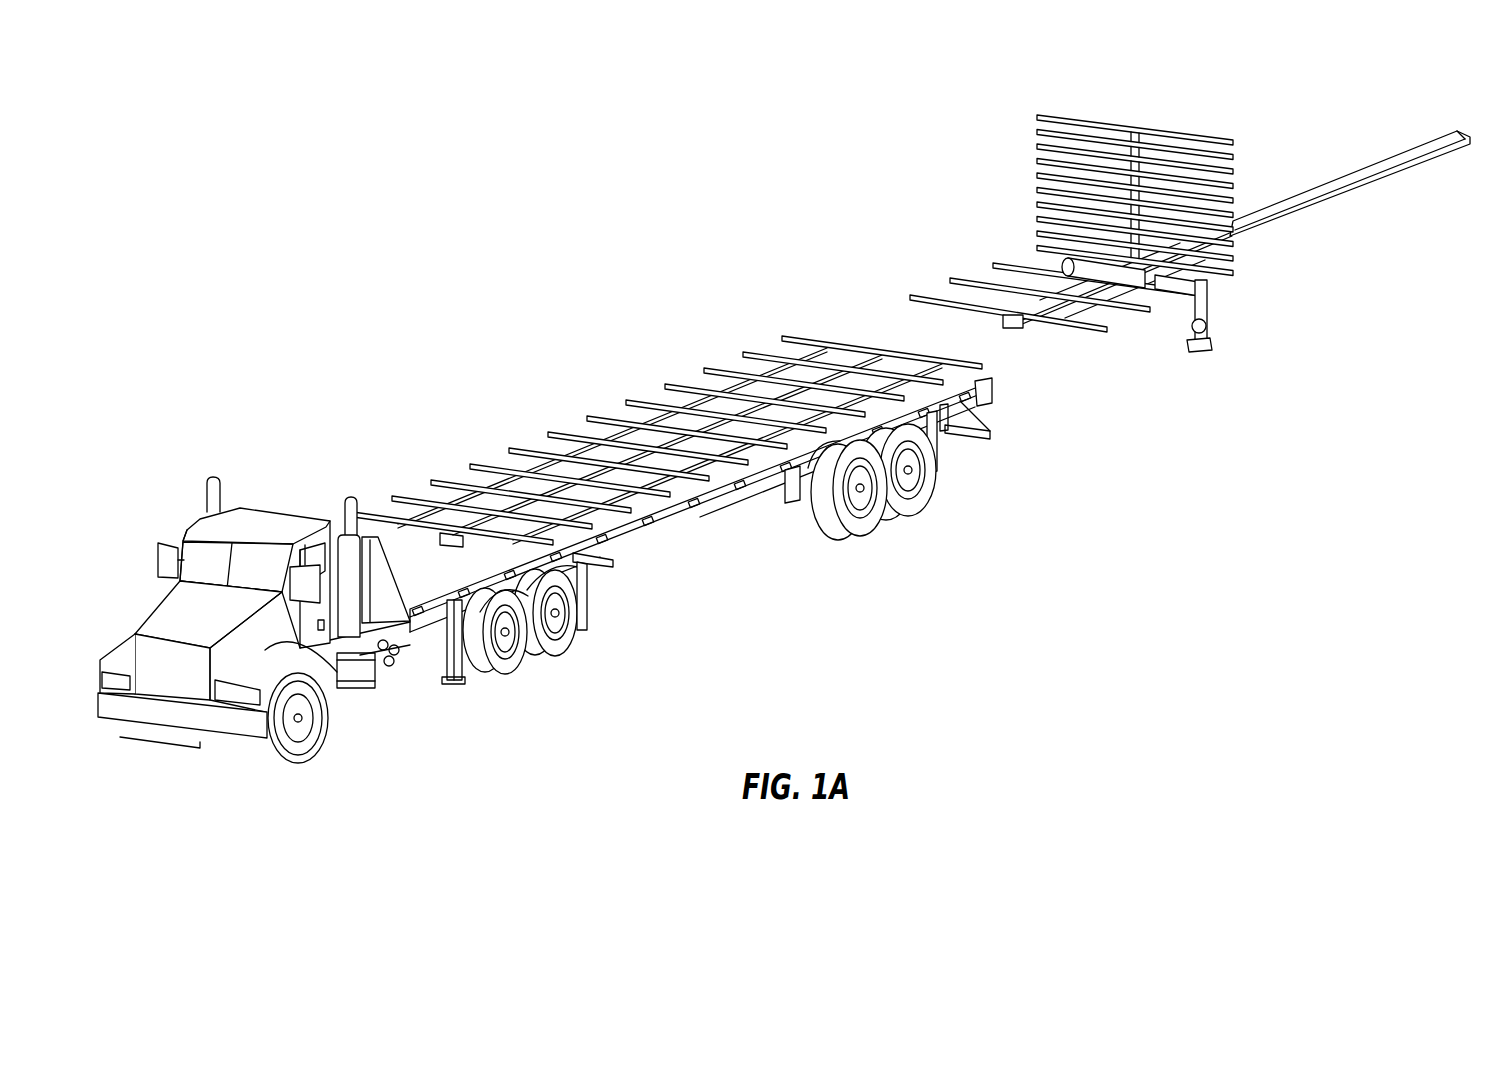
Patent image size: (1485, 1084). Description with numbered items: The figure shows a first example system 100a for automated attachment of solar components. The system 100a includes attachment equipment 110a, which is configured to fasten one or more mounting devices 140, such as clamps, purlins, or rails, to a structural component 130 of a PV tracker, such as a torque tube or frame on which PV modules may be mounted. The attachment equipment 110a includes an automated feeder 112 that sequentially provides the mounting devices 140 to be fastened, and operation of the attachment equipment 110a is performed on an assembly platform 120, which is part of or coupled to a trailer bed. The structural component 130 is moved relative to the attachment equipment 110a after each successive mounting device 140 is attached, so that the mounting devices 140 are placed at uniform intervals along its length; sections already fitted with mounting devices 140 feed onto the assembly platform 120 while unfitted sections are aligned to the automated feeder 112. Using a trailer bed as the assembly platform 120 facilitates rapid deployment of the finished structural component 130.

The system of automated attachment of solar components 100a is at (170, 114).
The attachment equipment 110a is at (1205, 289).
The automated feeder 112 is at (1154, 114).
The assembly platform 120 is at (637, 533).
The structural component 130 is at (1277, 217).
The mounting devices 140 is at (1037, 116).